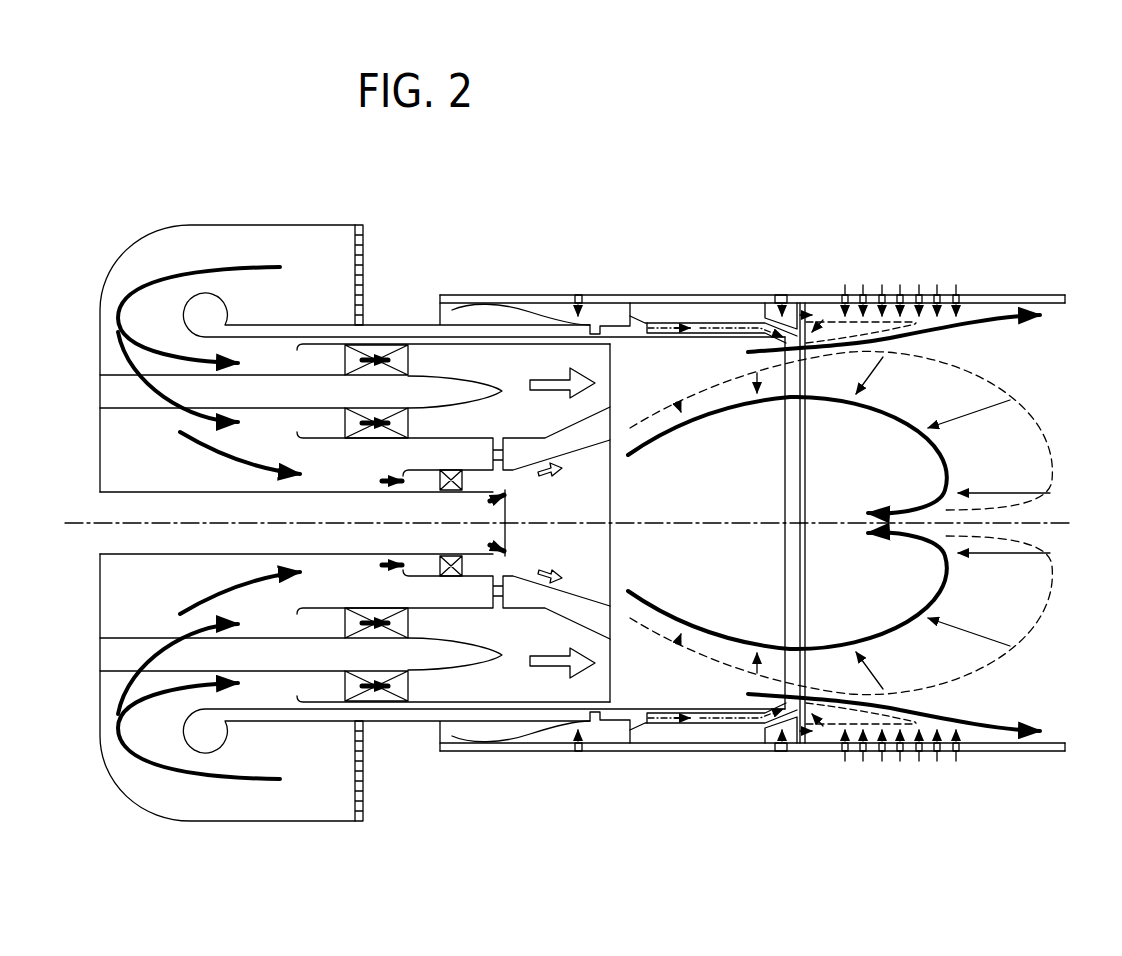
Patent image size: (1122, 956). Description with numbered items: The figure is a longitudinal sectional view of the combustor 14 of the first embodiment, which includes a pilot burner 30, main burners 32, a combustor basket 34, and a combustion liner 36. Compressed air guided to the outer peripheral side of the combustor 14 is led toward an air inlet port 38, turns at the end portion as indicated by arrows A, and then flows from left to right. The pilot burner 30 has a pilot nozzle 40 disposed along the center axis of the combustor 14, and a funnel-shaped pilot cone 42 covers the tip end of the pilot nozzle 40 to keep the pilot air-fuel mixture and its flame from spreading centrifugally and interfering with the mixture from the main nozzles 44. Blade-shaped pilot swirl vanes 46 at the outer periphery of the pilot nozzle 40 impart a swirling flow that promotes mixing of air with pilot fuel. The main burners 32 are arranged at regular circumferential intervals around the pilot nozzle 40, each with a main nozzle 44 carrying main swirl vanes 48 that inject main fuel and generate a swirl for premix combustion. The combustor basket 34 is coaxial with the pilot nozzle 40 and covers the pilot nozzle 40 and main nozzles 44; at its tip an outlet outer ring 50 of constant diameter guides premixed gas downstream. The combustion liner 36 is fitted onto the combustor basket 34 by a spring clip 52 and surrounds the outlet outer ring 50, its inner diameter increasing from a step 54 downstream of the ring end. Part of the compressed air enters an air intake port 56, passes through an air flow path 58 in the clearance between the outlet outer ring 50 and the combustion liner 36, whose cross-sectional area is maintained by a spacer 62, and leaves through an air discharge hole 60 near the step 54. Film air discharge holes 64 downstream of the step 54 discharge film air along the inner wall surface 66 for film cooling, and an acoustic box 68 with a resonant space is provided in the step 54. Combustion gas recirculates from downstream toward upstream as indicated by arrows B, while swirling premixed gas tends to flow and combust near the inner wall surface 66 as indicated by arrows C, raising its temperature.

The combustor 14 is at (643, 184).
The pilot burner 30 is at (624, 500).
The main burner 32 is at (624, 360).
The combustor basket 34 is at (418, 322).
The combustion liner 36 is at (1002, 294).
The air inlet port 38 is at (367, 240).
The pilot nozzle 40 is at (505, 515).
The pilot cone 42 is at (598, 547).
The main nozzle 44 is at (462, 370).
The pilot swirl vane 46 is at (445, 470).
The main swirl vane 48 is at (408, 418).
The outlet outer ring 50 is at (773, 437).
The spring clip 52 is at (521, 308).
The step 54 is at (818, 312).
The air intake port 56 is at (580, 292).
The air flow path 58 is at (713, 321).
The air discharge hole 60 is at (763, 338).
The spacer 62 is at (661, 321).
The film air discharge holes 64 is at (963, 289).
The inner wall surface 66 is at (1027, 304).
The acoustic box 68 is at (777, 294).
The arrows A is at (252, 262).
The arrows B is at (880, 417).
The arrows C is at (930, 333).